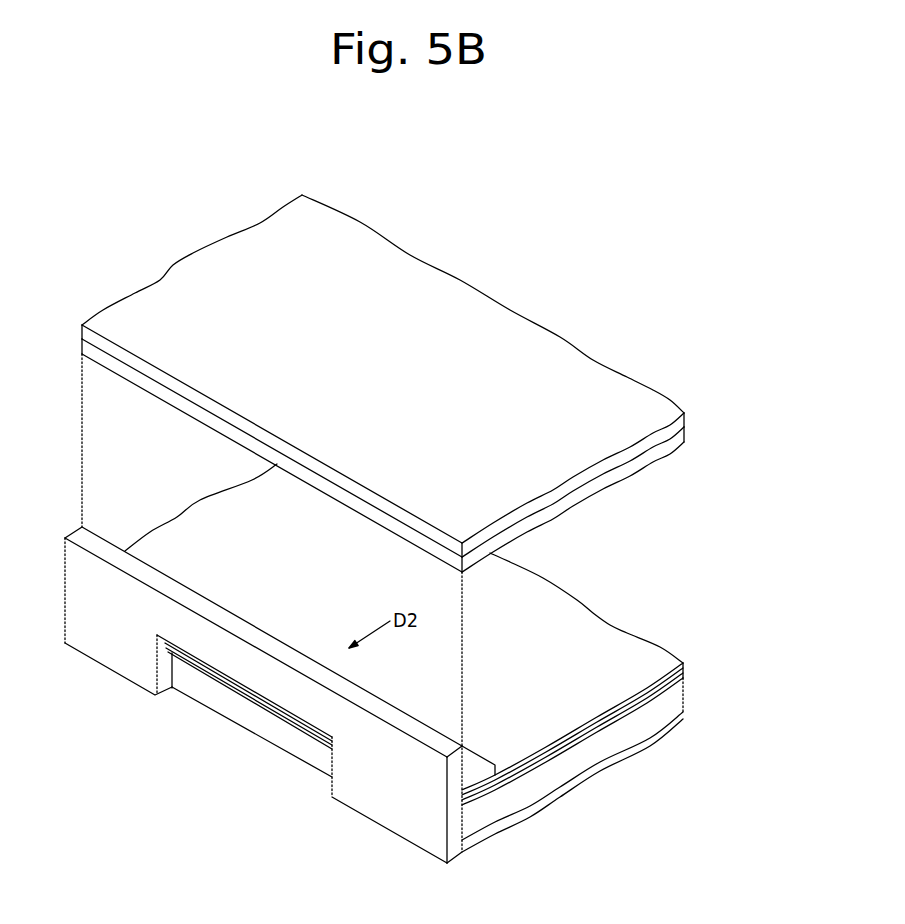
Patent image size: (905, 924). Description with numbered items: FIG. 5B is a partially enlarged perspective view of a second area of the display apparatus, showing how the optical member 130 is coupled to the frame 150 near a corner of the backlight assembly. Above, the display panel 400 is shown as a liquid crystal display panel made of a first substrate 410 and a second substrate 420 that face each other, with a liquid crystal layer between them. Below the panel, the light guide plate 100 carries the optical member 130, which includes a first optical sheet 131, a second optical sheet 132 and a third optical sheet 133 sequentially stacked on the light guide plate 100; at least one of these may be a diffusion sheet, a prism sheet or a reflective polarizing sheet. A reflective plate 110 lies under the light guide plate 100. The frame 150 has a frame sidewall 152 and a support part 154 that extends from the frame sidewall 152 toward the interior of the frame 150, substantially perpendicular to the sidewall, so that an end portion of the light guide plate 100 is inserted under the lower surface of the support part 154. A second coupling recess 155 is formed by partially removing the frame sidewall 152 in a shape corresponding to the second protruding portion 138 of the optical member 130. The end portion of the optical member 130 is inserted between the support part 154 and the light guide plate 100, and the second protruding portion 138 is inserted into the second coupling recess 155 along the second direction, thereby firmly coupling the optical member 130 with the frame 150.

The light guide plate 100 is at (452, 659).
The reflective plate 110 is at (545, 808).
The optical member 130 is at (621, 747).
The first optical sheet 131 is at (572, 750).
The second optical sheet 132 is at (607, 717).
The third optical sheet 133 is at (653, 700).
The second protruding portion 138 is at (283, 718).
The frame 150 is at (374, 717).
The frame sidewall 152 is at (457, 813).
The support part 154 is at (483, 793).
The second coupling recess 155 is at (167, 670).
The display panel 400 is at (439, 383).
The first substrate 410 is at (675, 432).
The second substrate 420 is at (670, 405).